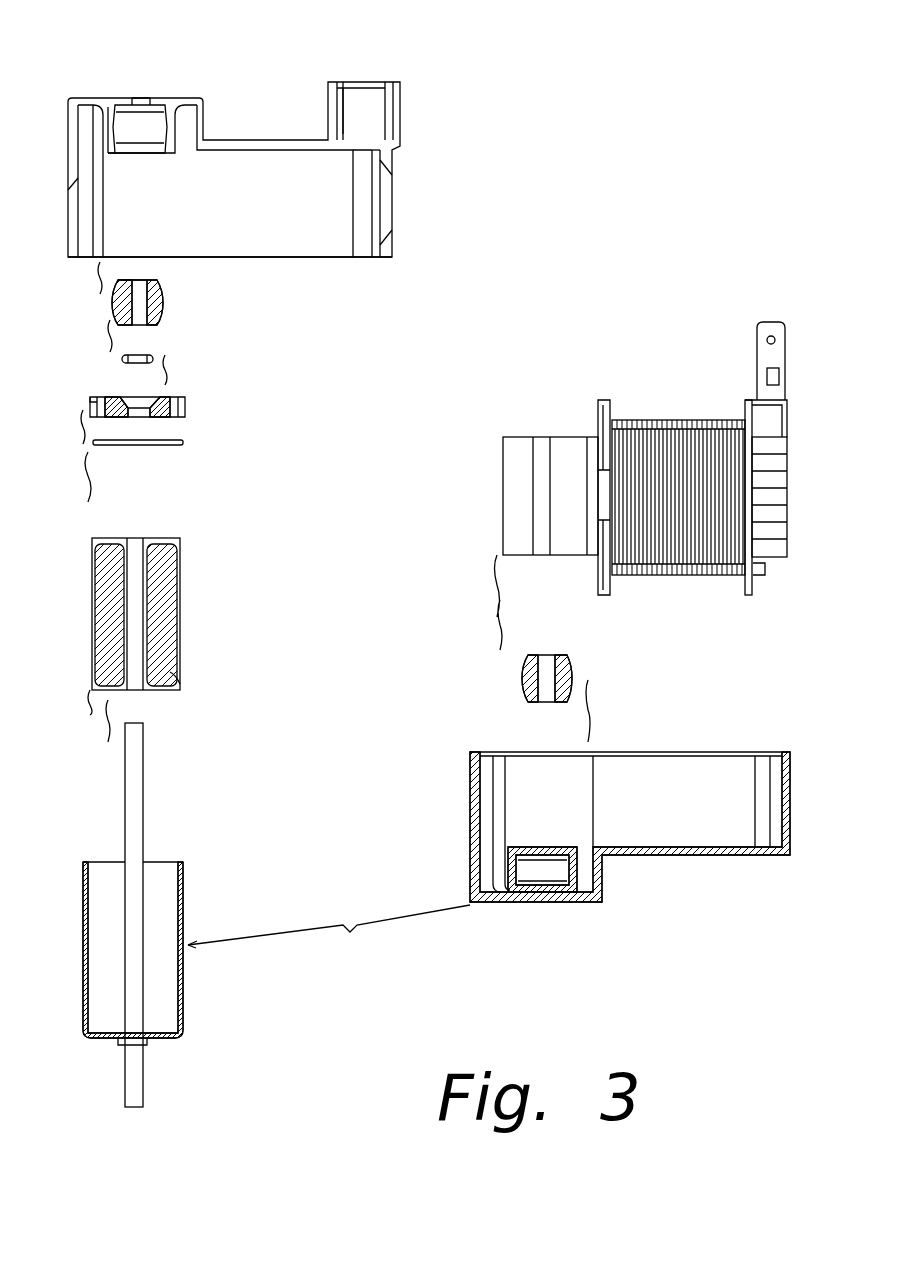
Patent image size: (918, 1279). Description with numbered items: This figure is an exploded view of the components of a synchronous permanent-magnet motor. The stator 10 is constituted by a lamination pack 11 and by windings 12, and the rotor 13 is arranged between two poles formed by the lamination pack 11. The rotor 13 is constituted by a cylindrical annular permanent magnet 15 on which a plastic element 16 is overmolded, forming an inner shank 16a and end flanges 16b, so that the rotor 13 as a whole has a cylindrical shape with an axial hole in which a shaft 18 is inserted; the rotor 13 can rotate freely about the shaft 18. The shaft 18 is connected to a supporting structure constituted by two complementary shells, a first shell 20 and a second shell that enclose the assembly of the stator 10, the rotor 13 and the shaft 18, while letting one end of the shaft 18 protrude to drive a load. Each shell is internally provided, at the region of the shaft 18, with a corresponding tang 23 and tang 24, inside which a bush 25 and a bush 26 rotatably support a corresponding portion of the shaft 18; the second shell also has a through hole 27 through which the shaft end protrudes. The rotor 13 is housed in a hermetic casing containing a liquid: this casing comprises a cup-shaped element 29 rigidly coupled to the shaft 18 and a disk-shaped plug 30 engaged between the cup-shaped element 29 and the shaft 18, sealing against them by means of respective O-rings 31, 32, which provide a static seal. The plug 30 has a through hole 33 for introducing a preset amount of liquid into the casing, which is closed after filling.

The stator 10 is at (645, 477).
The lamination pack 11 is at (520, 448).
The windings 12 is at (680, 505).
The rotor 13 is at (191, 643).
The cylindrical annular permanent magnet 15 is at (197, 653).
The plastic element 16 is at (193, 555).
The inner shank 16a is at (148, 620).
The end flanges 16b is at (102, 535).
The shaft 18 is at (138, 803).
The shell 20 is at (683, 853).
The tang 23 is at (567, 903).
The tang 24 is at (105, 133).
The bush 25 is at (520, 685).
The bush 26 is at (163, 303).
The through hole 27 is at (142, 97).
The cup-shaped element 29 is at (178, 1013).
The disk-shaped plug 30 is at (187, 393).
The O-ring 31 is at (183, 445).
The O-ring 32 is at (153, 356).
The through hole 33 is at (103, 397).